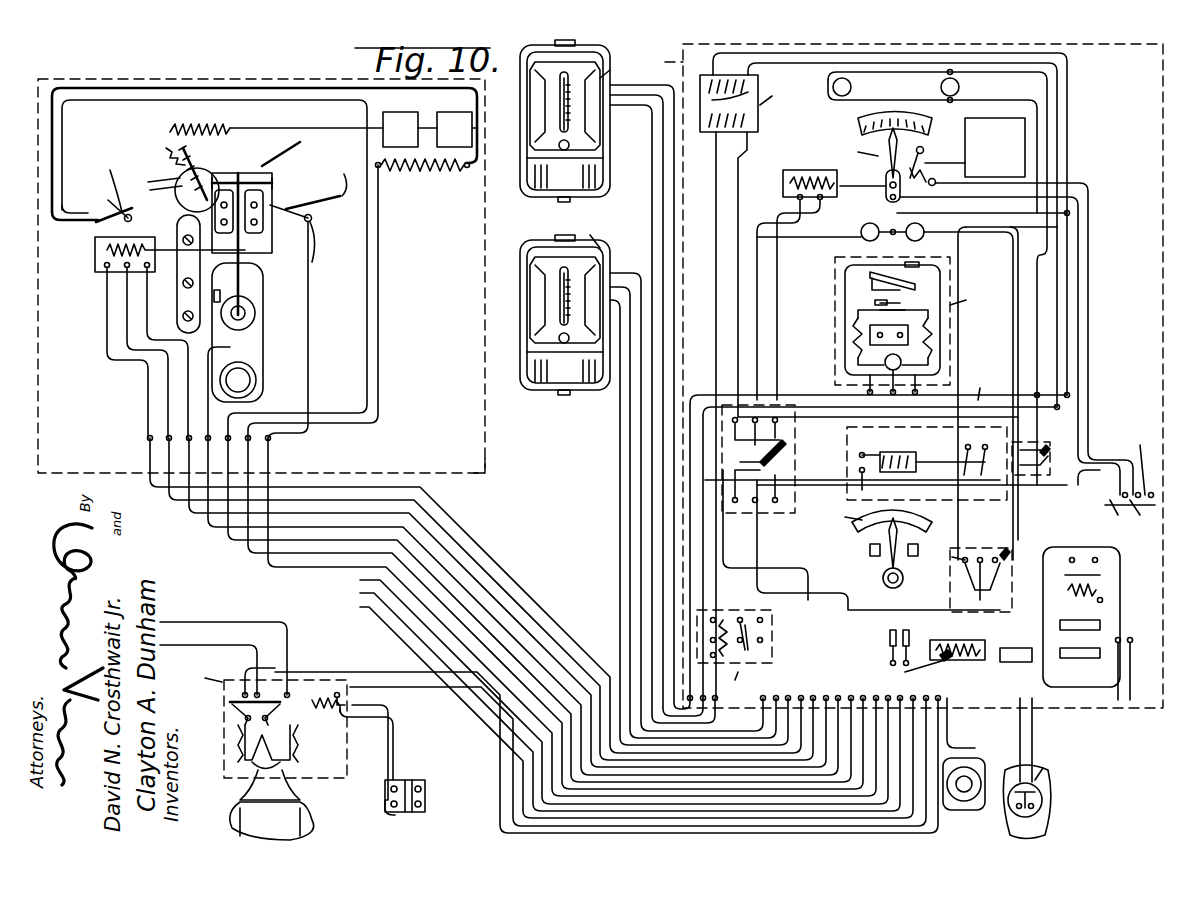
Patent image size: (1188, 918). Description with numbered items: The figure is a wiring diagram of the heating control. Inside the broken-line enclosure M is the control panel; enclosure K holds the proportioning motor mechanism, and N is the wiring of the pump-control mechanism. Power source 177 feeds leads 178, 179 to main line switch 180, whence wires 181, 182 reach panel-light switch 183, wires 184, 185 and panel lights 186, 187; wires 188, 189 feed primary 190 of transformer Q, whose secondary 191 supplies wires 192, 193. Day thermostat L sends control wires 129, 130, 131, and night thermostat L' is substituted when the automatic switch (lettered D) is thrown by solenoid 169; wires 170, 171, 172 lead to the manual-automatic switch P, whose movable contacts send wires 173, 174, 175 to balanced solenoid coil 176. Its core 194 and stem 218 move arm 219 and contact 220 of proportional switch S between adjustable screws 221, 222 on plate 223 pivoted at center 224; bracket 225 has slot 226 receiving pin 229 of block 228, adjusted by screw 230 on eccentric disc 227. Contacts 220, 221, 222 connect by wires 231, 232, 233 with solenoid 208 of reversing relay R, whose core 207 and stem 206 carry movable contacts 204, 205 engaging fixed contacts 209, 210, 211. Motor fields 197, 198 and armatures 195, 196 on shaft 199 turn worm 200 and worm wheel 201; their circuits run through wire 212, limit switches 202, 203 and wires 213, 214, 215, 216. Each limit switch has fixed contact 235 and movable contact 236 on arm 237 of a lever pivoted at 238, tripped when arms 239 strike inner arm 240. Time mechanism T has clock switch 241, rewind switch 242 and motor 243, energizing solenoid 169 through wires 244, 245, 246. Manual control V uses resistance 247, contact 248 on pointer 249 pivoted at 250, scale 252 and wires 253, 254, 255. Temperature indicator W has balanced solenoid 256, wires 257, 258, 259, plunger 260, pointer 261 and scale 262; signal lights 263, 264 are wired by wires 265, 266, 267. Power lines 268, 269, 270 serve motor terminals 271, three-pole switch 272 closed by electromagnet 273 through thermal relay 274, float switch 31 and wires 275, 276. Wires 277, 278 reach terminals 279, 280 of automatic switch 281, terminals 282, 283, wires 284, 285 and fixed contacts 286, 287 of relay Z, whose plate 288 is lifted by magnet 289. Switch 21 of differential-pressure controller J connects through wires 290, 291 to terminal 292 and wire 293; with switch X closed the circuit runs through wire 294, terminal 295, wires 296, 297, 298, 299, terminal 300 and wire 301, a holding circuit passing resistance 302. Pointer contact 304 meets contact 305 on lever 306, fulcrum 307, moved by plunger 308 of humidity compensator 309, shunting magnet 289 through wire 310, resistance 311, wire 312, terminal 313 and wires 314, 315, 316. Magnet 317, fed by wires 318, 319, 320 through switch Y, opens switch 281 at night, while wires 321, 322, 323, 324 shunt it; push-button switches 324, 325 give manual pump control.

The switch of differential-pressure controller 21 is at (1030, 818).
The float-controlled switch 31 is at (410, 812).
The control wire 129 is at (641, 410).
The control wire 130 is at (630, 428).
The control wire 131 is at (620, 450).
The solenoid 169 is at (734, 640).
The wire 170 is at (708, 521).
The wire 171 is at (700, 535).
The wire 172 is at (700, 548).
The wire 173 is at (548, 622).
The wire 174 is at (563, 640).
The wire 175 is at (565, 660).
The solenoid coil 176 is at (110, 268).
The source of electric power 177 is at (964, 784).
The lead 178 is at (959, 723).
The lead 179 is at (968, 812).
The main line switch 180 is at (905, 684).
The power line wire 181 is at (1025, 522).
The power line wire 182 is at (1030, 538).
The panel-light switch 183 is at (1050, 462).
The wire 184 is at (1018, 310).
The wire 185 is at (1037, 327).
The panel light 186 is at (959, 88).
The panel light 187 is at (851, 88).
The wire 188 is at (1057, 250).
The wire 189 is at (755, 78).
The primary of transformer 190 is at (760, 110).
The secondary of transformer 191 is at (730, 415).
The wire 192 is at (725, 176).
The wire 193 is at (753, 274).
The movable core 194 is at (107, 248).
The motor armature 195 is at (400, 112).
The motor armature 196 is at (454, 112).
The motor field 197 is at (402, 170).
The motor field 198 is at (444, 170).
The shaft 199 is at (330, 124).
The worm 200 is at (222, 124).
The worm wheel 201 is at (166, 148).
The limit switch 202 is at (314, 240).
The limit switch 203 is at (100, 218).
The movable contact member 204 is at (955, 462).
The movable contact member 205 is at (990, 445).
The stem 206 is at (912, 424).
The core 207 is at (832, 469).
The solenoid 208 is at (860, 450).
The fixed contact 209 is at (1031, 449).
The fixed contact 210 is at (980, 430).
The fixed contact 211 is at (920, 404).
The wire 212 is at (380, 330).
The wire 213 is at (63, 130).
The wire 214 is at (312, 342).
The wire 215 is at (962, 520).
The wire 216 is at (82, 79).
The actuating stem 218 is at (176, 262).
The arm 219 is at (262, 226).
The movable contact member 220 is at (238, 178).
The fixed contact member 221 is at (262, 180).
The fixed contact member 222 is at (204, 179).
The supporting plate 223 is at (296, 210).
The pivotal center 224 is at (250, 314).
The bracket 225 is at (215, 178).
The slot 226 is at (175, 162).
The eccentric disc 227 is at (190, 203).
The movable block 228 is at (182, 190).
The pin 229 is at (178, 186).
The screw 230 is at (210, 214).
The wire 231 is at (212, 362).
The wire 232 is at (870, 510).
The wire 233 is at (196, 322).
The fixed contact 235 is at (108, 200).
The movable contact 236 is at (112, 184).
The switch lever arm 237 is at (110, 170).
The pivot 238 is at (118, 220).
The arm 239 is at (180, 178).
The inner arm 240 is at (132, 220).
The quick-acting switch 241 is at (912, 274).
The switch 242 is at (895, 303).
The motor 243 is at (865, 370).
The wire 244 is at (703, 388).
The wire 245 is at (716, 404).
The wire 246 is at (845, 266).
The fixed resistance 247 is at (898, 540).
The movable contact 248 is at (886, 546).
The pointer 249 is at (898, 524).
The pivot 250 is at (899, 566).
The dial or scale 252 is at (916, 510).
The wire 253 is at (885, 562).
The wire 254 is at (870, 480).
The wire 255 is at (758, 552).
The balanced solenoid 256 is at (798, 172).
The wire 257 is at (777, 246).
The wire 258 is at (757, 263).
The wire 259 is at (290, 162).
The plunger 260 is at (868, 188).
The pointer 261 is at (928, 135).
The dial or scale 262 is at (930, 118).
The signal light 263 is at (860, 236).
The signal light 264 is at (930, 237).
The wire 265 is at (1005, 244).
The wire 266 is at (960, 246).
The wire 267 is at (958, 252).
The alternating current power line 268 is at (205, 616).
The alternating current power line 269 is at (255, 640).
The alternating current power line 270 is at (242, 672).
The motor terminals 271 is at (224, 815).
The three-pole switch 272 is at (236, 712).
The electromagnet 273 is at (322, 712).
The thermal overload relay 274 is at (250, 768).
The wire 275 is at (393, 762).
The wire 276 is at (360, 790).
The wire 277 is at (405, 680).
The wire 278 is at (444, 705).
The terminal 279 is at (974, 697).
The terminal 280 is at (946, 669).
The automatic switch 281 is at (1019, 689).
The terminal 282 is at (1020, 654).
The terminal 283 is at (1039, 689).
The wire 284 is at (1076, 539).
The wire 285 is at (1071, 555).
The fixed contact 286 is at (1119, 550).
The fixed contact 287 is at (1119, 570).
The movable contact plate 288 is at (1082, 581).
The magnet device 289 is at (1092, 595).
The wire 290 is at (1012, 746).
The wire 291 is at (1052, 734).
The terminal 292 is at (1062, 699).
The wire 293 is at (1056, 715).
The wire 294 is at (1136, 669).
The terminal 295 is at (1126, 699).
The wire 296 is at (1142, 669).
The wire 297 is at (1039, 506).
The wire 298 is at (1095, 470).
The wire 299 is at (1126, 719).
The terminal 300 is at (1084, 643).
The wire 301 is at (1084, 620).
The resistance 302 is at (1102, 648).
The contact 304 is at (876, 180).
The contact 305 is at (910, 194).
The lever 306 is at (938, 178).
The fulcrum 307 is at (926, 150).
The plunger 308 is at (965, 149).
The humidity-compensator 309 is at (1000, 125).
The wire 310 is at (1086, 734).
The resistance 311 is at (1058, 630).
The wire 312 is at (1096, 749).
The terminal 313 is at (1129, 739).
The wire 314 is at (1134, 754).
The wire 315 is at (1090, 393).
The wire 316 is at (1080, 378).
The magnet 317 is at (957, 714).
The wire 318 is at (878, 545).
The wire 319 is at (945, 645).
The wire 320 is at (944, 570).
The wire 321 is at (972, 600).
The wire 322 is at (972, 585).
The wire 323 is at (985, 540).
The push-button switch 324 is at (995, 545).
The push-button switch 325 is at (1149, 500).
The relay D is at (742, 679).
The differential-pressure controller J is at (1027, 768).
The proportioning motor mechanism enclosure K is at (488, 465).
The day thermostat L is at (565, 306).
The night thermostat L' is at (572, 121).
The control panel M is at (904, 376).
The pump-control mechanism wiring N is at (265, 723).
The manually operated switch P is at (758, 459).
The transformer Q is at (743, 103).
The reversing switch R is at (927, 435).
The proportional control switch S is at (246, 244).
The time-controlled mechanism T is at (907, 321).
The manual control apparatus V is at (884, 519).
The temperature indicator W is at (886, 133).
The switch X is at (1130, 471).
The switch Y is at (975, 579).
The quick-acting relay Z is at (1081, 606).